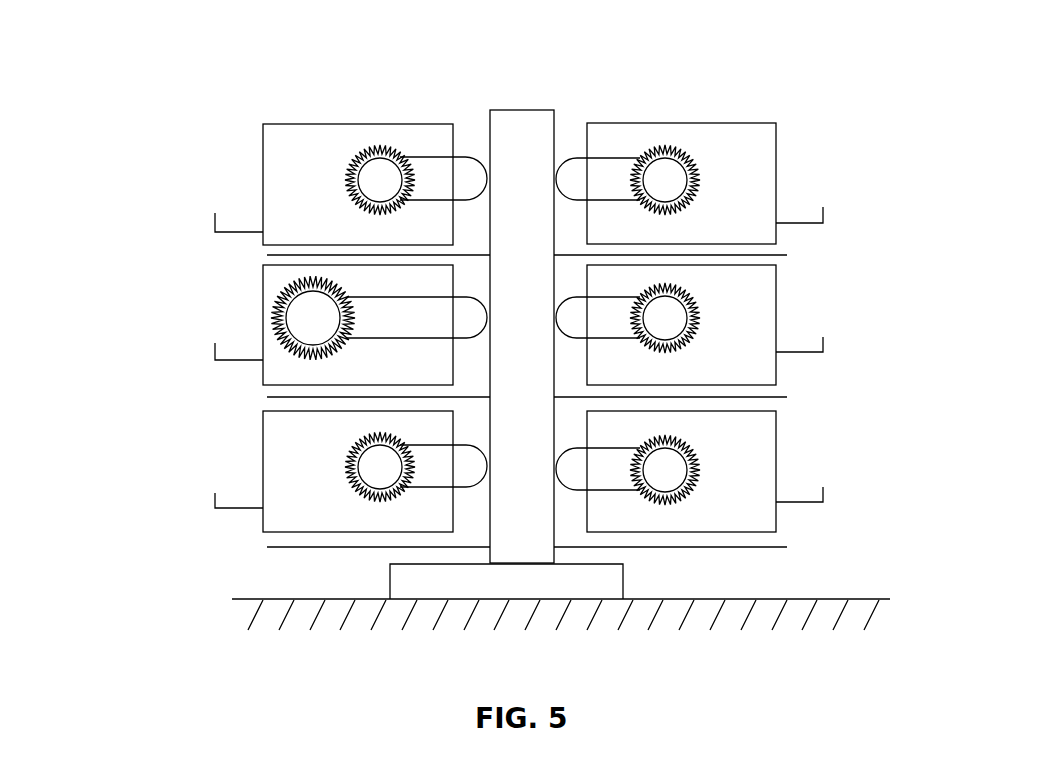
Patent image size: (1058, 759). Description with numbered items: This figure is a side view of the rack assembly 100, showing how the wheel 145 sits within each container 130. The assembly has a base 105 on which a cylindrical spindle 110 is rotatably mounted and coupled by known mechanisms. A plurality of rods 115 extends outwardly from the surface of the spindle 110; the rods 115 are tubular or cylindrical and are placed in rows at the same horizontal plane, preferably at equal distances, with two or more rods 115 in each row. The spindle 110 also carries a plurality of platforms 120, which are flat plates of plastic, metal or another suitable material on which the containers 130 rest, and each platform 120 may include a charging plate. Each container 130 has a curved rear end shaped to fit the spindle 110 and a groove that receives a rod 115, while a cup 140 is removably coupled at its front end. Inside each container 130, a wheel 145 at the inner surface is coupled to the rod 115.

The rack assembly 100 is at (232, 99).
The base 105 is at (390, 583).
The spindle 110 is at (545, 138).
The rod 115 is at (428, 157).
The platform 120 is at (300, 255).
The container 130 is at (303, 133).
The cup 140 is at (215, 223).
The wheel 145 is at (366, 150).